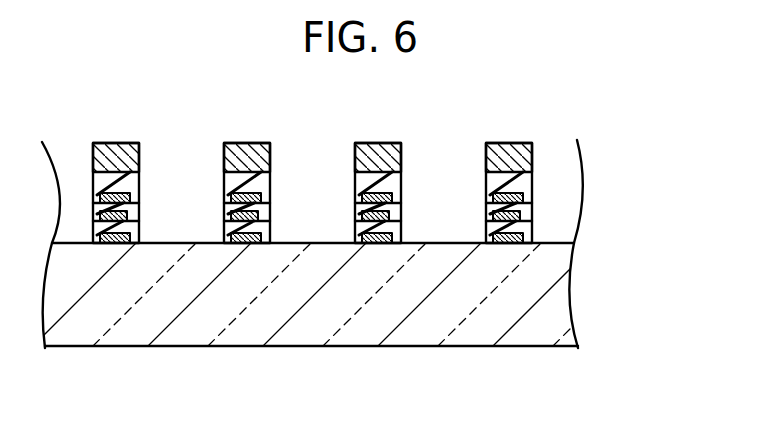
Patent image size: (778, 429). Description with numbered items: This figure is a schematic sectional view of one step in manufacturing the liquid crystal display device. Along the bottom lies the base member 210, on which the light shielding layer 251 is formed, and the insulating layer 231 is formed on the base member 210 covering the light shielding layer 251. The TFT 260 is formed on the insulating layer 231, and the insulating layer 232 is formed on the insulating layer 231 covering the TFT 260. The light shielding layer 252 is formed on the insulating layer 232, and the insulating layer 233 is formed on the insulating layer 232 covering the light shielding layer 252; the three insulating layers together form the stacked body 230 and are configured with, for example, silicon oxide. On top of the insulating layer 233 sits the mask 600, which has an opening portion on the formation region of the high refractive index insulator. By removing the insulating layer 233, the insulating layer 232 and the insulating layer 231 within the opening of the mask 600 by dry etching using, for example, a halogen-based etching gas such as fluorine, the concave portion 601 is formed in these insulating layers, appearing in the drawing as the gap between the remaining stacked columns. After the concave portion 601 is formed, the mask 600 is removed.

The base member 210 is at (571, 308).
The stacked body (layers 231-233) 230 is at (608, 193).
The insulating layer 231 is at (574, 227).
The insulating layer 232 is at (572, 202).
The insulating layer 233 is at (572, 180).
The light shielding layer 251 is at (391, 319).
The light shielding layer 252 is at (415, 299).
The TFT 260 is at (350, 274).
The mask 600 is at (386, 128).
The concave portion 601 is at (302, 195).